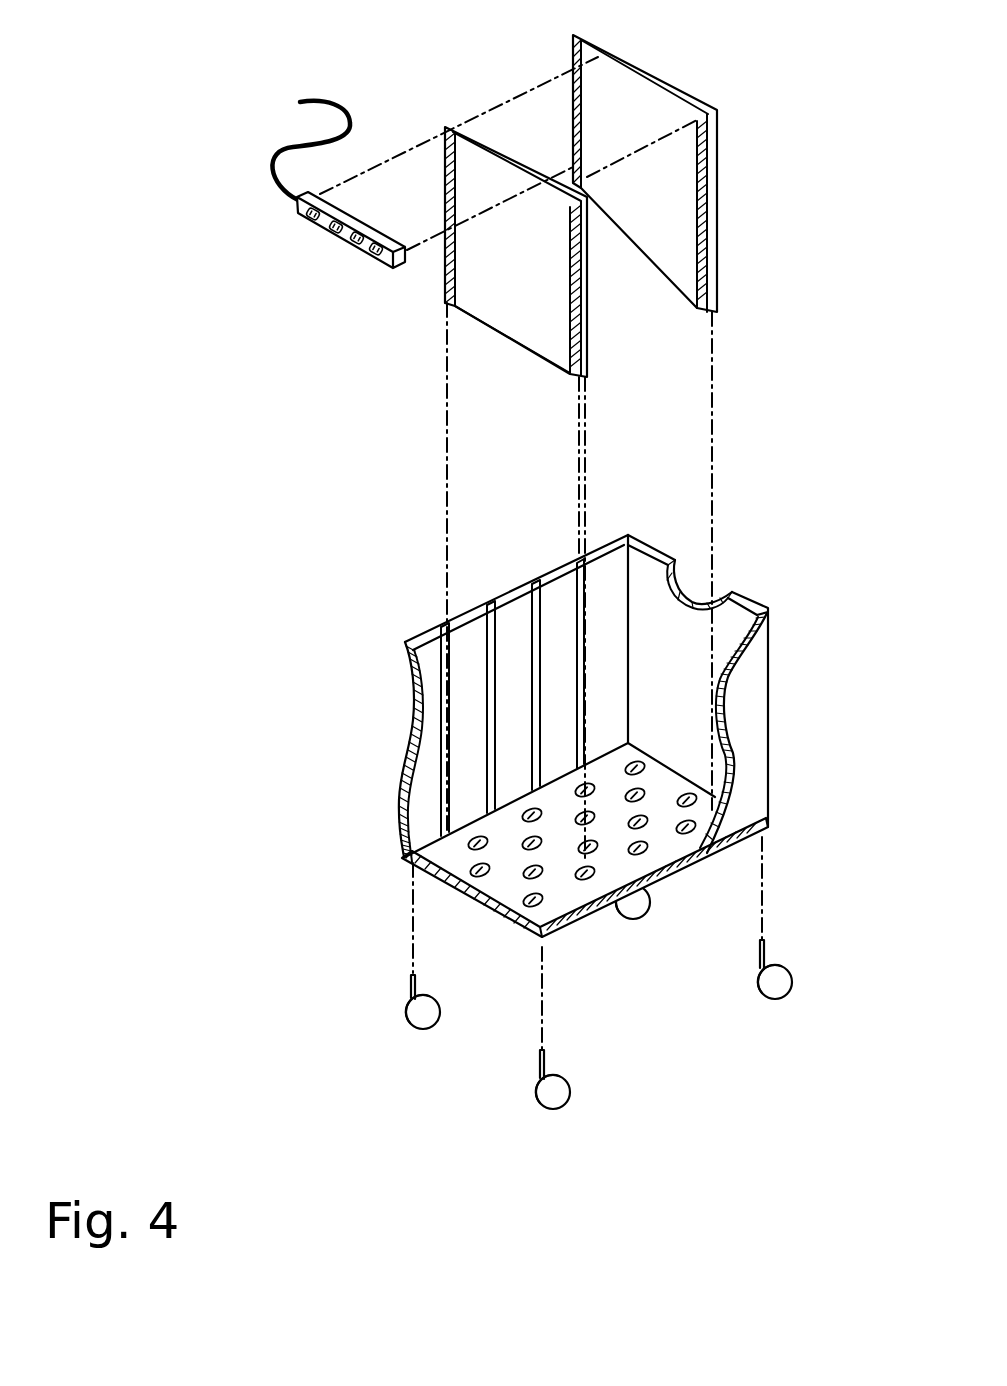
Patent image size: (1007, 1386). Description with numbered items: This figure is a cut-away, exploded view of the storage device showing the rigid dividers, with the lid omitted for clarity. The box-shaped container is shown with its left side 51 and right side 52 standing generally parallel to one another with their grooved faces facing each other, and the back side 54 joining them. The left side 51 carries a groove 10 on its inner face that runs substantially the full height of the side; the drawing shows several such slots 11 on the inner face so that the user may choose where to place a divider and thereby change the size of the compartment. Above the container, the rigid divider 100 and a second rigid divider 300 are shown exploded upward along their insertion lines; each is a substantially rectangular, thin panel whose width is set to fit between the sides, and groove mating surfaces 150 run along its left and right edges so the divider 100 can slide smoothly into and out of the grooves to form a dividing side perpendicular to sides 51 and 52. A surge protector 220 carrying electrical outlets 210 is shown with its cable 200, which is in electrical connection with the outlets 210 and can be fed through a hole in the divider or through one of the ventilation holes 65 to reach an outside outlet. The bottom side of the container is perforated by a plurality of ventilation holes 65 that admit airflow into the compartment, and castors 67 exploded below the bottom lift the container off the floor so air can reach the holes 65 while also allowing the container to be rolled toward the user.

The groove 10 is at (609, 737).
The slots 11 is at (443, 680).
The left side 51 is at (433, 630).
The right side 52 is at (762, 689).
The back side 54 is at (753, 598).
The ventilation holes 65 is at (527, 903).
The castors 67 is at (651, 900).
The rigid divider 100 is at (690, 80).
The groove mating surfaces 150 is at (705, 258).
The cable 200 is at (352, 118).
The electrical outlets 210 is at (358, 250).
The surge protector 220 is at (293, 213).
The second rigid divider 300 is at (507, 288).